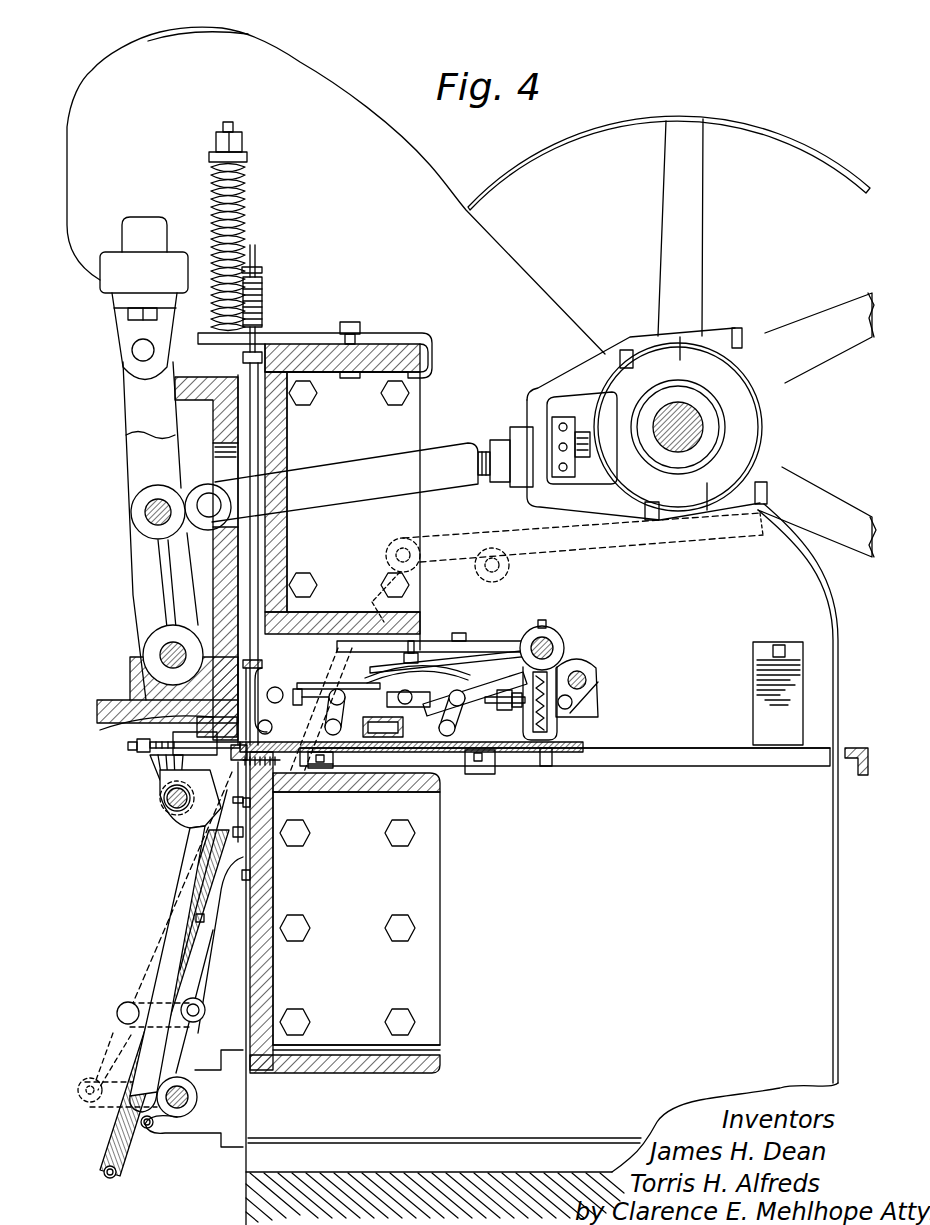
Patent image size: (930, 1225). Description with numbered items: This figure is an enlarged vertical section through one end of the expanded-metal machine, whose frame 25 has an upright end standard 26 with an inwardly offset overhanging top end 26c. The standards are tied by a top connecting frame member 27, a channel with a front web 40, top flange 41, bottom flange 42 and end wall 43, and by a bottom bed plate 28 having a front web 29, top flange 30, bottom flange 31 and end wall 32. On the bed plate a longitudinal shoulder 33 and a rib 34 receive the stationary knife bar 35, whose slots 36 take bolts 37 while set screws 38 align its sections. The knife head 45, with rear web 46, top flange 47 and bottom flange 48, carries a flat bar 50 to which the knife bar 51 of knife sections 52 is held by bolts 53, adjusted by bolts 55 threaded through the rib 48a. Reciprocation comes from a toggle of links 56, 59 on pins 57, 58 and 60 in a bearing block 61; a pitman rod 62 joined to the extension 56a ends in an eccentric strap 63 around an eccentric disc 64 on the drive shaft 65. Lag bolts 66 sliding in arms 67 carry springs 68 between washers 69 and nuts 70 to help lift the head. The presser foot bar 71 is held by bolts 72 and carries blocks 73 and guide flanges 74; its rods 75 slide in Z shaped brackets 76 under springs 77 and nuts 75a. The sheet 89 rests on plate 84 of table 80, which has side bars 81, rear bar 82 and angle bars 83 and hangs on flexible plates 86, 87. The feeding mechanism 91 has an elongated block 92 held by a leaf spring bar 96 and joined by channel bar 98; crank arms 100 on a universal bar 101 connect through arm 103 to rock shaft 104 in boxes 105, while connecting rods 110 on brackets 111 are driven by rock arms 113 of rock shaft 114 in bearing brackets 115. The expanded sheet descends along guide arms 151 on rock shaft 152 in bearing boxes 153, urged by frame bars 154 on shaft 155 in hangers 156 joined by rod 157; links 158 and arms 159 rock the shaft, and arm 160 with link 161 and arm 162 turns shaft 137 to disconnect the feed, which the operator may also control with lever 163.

The frame 25 is at (456, 190).
The end standard 26 is at (542, 864).
The overhanging top end of end standard 26c is at (336, 190).
The top connecting frame member 27 is at (385, 343).
The bottom connecting frame member or bed plate 28 is at (345, 1068).
The front web 29 is at (266, 948).
The top flange 30 is at (377, 792).
The bottom flange 31 is at (322, 1060).
The end wall 32 is at (440, 965).
The longitudinal shoulder 33 is at (268, 770).
The rib 34 is at (246, 818).
The stationary knife bar 35 is at (190, 815).
The slot 36 is at (190, 796).
The bolt 37 is at (322, 772).
The set screw 38 is at (204, 918).
The front web 40 is at (287, 540).
The top flange 41 is at (428, 352).
The bottom flange 42 is at (414, 622).
The end wall 43 is at (420, 513).
The knife head 45 is at (197, 414).
The upright rear web 46 is at (216, 553).
The top flange 47 is at (176, 388).
The bottom flange 48 is at (125, 700).
The longitudinal rib 48a is at (137, 733).
The flat bar 50 is at (136, 744).
The knife bar 51 is at (150, 752).
The knife section 52 is at (185, 757).
The bolt 53 is at (152, 770).
The adjustment bolt 55 is at (128, 748).
The link 56 is at (146, 578).
The rearward extension 56a is at (198, 492).
The pin 57 is at (158, 651).
The pin 58 is at (143, 511).
The link 59 is at (135, 467).
The pin 60 is at (132, 350).
The bearing block 61 is at (118, 322).
The pitman rod 62 is at (348, 468).
The eccentric strap 63 is at (766, 433).
The eccentric disc 64 is at (720, 381).
The drive shaft 65 is at (704, 430).
The lag bolt 66 is at (222, 356).
The arm or strap 67 is at (350, 336).
The expansion coiled spring 68 is at (243, 236).
The washer 69 is at (244, 158).
The nut 70 is at (237, 140).
The presser foot bar 71 is at (262, 670).
The bolt 72 is at (262, 690).
The sectional block 73 is at (232, 752).
The guide flange 74 is at (310, 683).
The rod or bolt 75 is at (259, 418).
The nut 75a is at (263, 348).
The Z shaped bracket 76 is at (257, 268).
The expansion coiled spring 77 is at (262, 300).
The table or support 80 is at (651, 748).
The side bar 81 is at (672, 766).
The rear bar 82 is at (866, 775).
The angle bar 83 is at (488, 774).
The plate 84 is at (546, 766).
The flexible plate 86 is at (471, 660).
The flexible plate 87 is at (754, 677).
The metallic sheet 89 is at (582, 746).
The sheet feeding mechanism 91 is at (384, 630).
The elongated block 92 is at (463, 745).
The leaf tension spring bar 96 is at (376, 684).
The inverted channel bar 98 is at (363, 730).
The crank arm 100 is at (277, 704).
The universal bar 101 is at (335, 684).
The arm 103 is at (595, 684).
The rock shaft 104 is at (590, 671).
The box 105 is at (594, 706).
The connecting rod 110 is at (458, 706).
The bracket 111 is at (386, 700).
The rock arm 113 is at (554, 680).
The rock shaft 114 is at (551, 641).
The bearing bracket 115 is at (461, 633).
The shaft 137 is at (495, 549).
The guide arm 151 is at (188, 960).
The rock shaft 152 is at (190, 1097).
The bearing box 153 is at (203, 1125).
The bar 154 is at (160, 958).
The shaft 155 is at (168, 804).
The hanger 156 is at (160, 786).
The rod 157 is at (118, 1172).
The link 158 is at (120, 1037).
The arm 159 is at (200, 1022).
The arm 160 is at (100, 1108).
The link 161 is at (370, 604).
The arm 162 is at (455, 546).
The lever 163 is at (642, 551).